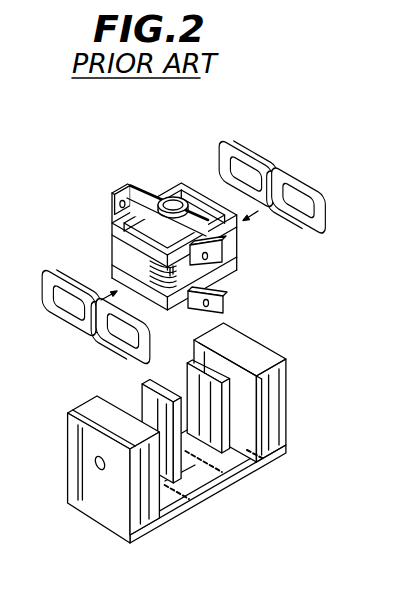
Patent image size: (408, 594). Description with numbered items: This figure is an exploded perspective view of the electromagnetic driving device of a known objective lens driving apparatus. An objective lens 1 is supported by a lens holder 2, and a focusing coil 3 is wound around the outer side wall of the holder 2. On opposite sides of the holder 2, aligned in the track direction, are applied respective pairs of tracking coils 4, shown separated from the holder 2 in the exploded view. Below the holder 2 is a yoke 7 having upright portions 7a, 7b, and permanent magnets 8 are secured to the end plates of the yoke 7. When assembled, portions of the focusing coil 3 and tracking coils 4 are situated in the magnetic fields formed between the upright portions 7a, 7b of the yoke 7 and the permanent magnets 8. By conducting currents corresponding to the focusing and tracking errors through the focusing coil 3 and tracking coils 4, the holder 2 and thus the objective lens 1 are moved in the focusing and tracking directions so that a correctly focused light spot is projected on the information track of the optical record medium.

The objective lens 1 is at (175, 205).
The lens holder 2 is at (133, 192).
The focusing coil 3 is at (196, 309).
The tracking coils 4 is at (281, 168).
The yoke 7 is at (250, 473).
The upright portion of yoke 7a is at (175, 448).
The upright portion of yoke 7b is at (230, 374).
The permanent magnets 8 is at (83, 405).